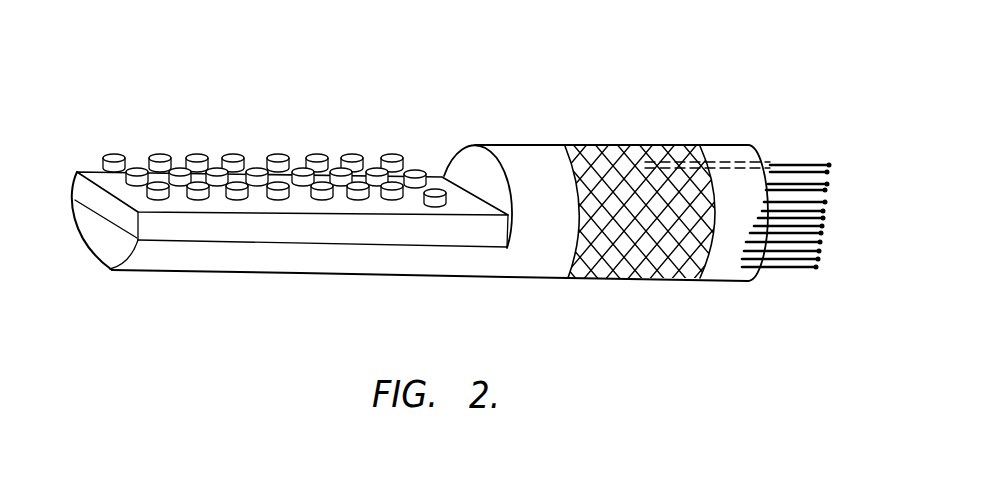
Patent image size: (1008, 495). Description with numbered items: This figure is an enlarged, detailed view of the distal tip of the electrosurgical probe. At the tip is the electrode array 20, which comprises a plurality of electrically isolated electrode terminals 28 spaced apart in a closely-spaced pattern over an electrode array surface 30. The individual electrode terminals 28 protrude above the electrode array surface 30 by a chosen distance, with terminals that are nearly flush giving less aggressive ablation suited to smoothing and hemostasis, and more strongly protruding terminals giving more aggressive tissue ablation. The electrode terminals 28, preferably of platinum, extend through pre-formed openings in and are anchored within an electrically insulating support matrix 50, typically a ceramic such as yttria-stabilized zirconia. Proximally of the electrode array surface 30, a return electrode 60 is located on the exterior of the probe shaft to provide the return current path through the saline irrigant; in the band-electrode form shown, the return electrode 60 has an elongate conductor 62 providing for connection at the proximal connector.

The electrode array 20 is at (276, 58).
The electrode terminals 28 is at (197, 157).
The electrode array surface 30 is at (213, 205).
The electrically insulating support matrix 50 is at (252, 228).
The return electrode 60 is at (654, 266).
The elongate conductor 62 is at (797, 160).